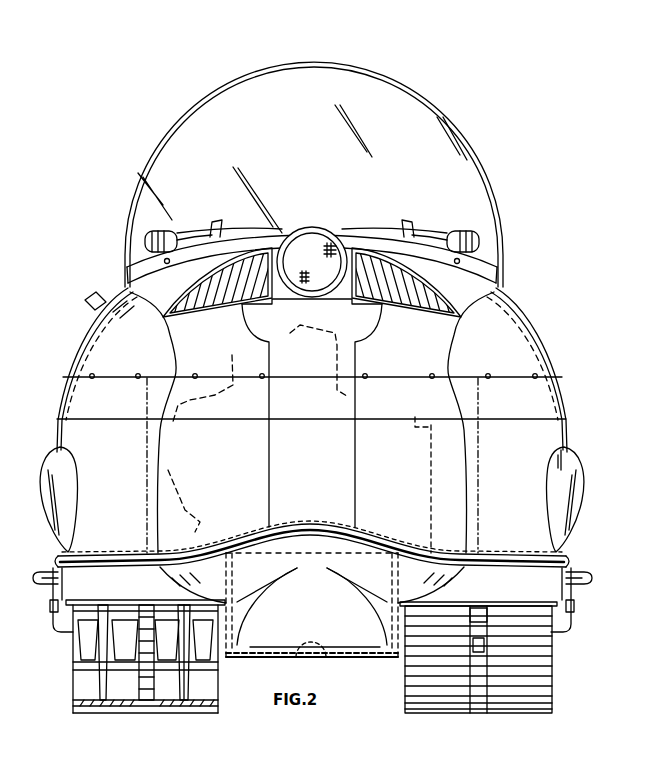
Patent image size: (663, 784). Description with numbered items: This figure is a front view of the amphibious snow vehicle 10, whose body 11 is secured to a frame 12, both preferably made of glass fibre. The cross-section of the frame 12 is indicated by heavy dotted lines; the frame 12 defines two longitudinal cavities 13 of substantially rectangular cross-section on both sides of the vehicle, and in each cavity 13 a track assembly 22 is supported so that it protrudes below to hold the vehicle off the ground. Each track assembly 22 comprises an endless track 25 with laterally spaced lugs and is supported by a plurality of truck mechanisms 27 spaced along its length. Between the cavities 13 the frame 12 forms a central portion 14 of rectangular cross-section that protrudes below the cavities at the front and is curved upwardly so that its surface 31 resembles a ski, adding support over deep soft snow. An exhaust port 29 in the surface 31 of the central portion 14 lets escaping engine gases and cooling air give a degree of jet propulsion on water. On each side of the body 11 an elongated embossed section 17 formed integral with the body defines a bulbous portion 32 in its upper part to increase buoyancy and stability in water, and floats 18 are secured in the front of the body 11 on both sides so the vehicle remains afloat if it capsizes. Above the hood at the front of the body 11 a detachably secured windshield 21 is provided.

The amphibious snow vehicle 10 is at (353, 705).
The body 11 is at (70, 405).
The frame 12 is at (55, 624).
The longitudinal cavities 13 is at (75, 591).
The central portion 14 is at (250, 643).
The elongated embossed section 17 is at (46, 462).
The floats 18 is at (70, 438).
The windshield 21 is at (496, 222).
The track assembly 22 is at (135, 719).
The endless track 25 is at (543, 643).
The truck mechanisms 27 is at (190, 681).
The exhaust port 29 is at (323, 652).
The surface of the central portion 31 is at (263, 657).
The bulbous portion 32 is at (566, 458).